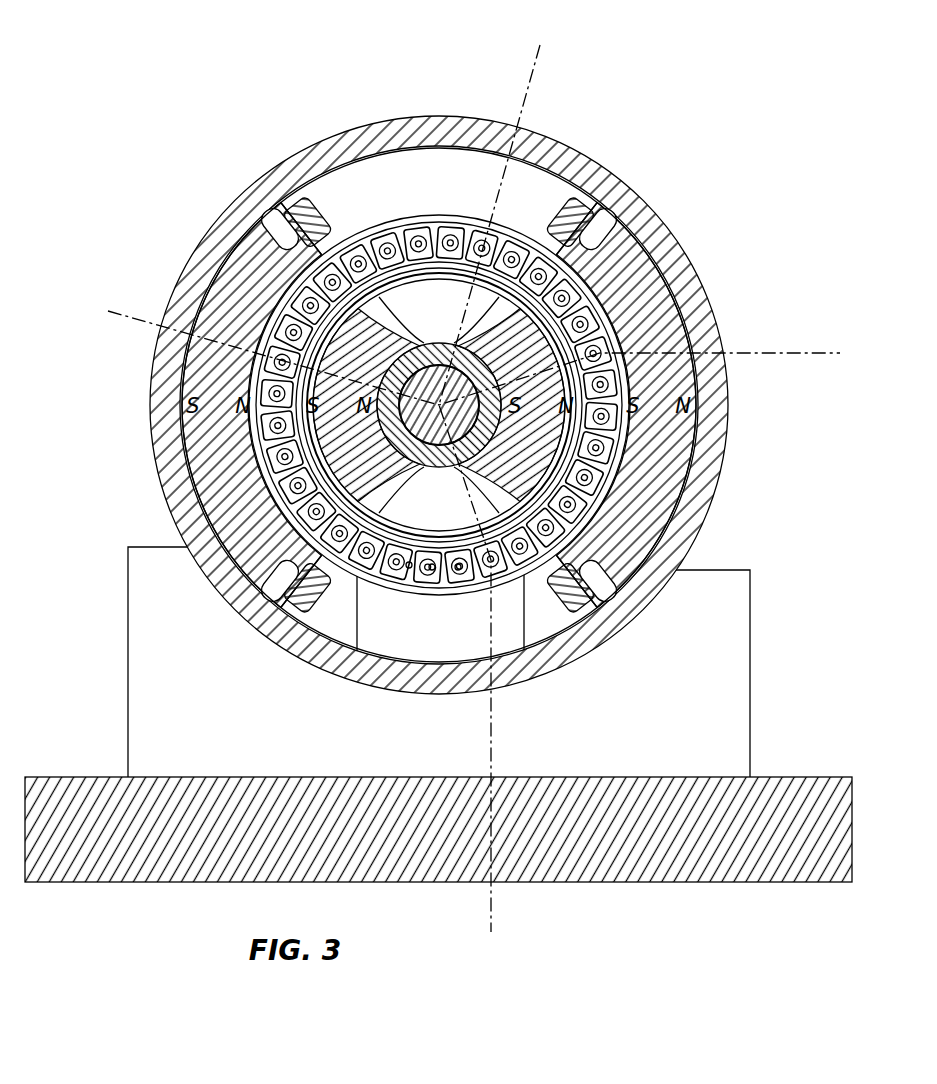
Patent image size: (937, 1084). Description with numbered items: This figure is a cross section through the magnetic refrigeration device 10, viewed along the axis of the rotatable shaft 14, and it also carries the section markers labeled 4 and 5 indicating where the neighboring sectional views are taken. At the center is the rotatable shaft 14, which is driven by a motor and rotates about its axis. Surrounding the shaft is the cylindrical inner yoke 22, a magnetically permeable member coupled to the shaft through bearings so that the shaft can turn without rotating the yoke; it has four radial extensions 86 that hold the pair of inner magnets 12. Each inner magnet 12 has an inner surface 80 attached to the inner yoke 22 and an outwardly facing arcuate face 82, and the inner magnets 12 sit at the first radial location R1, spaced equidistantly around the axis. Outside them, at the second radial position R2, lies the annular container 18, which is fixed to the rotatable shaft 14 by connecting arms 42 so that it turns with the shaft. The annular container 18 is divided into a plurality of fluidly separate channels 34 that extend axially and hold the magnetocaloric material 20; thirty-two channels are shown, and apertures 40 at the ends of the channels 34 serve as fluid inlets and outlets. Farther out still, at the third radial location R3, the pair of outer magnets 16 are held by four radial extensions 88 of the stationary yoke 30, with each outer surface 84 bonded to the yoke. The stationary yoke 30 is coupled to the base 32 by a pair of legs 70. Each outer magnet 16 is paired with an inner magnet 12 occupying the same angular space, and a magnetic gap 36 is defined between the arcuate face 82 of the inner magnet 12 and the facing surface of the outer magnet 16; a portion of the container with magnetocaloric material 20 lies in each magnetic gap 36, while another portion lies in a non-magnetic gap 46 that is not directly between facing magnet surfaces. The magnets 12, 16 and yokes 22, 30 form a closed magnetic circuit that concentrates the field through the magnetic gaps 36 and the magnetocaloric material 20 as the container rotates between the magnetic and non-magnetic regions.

The magnetic refrigeration device 10 is at (700, 45).
The inner magnets 12 is at (540, 455).
The rotatable shaft 14 is at (215, 196).
The outer magnets 16 is at (192, 290).
The annular container 18 is at (548, 168).
The magnetocaloric material 20 is at (440, 232).
The inner yoke 22 is at (600, 228).
The stationary yoke 30 is at (355, 226).
The base 32 is at (805, 790).
The channels 34 is at (385, 238).
The magnetic gap 36 is at (612, 346).
The apertures 40 is at (458, 568).
The connecting arms 42 is at (452, 335).
The non-magnetic gap 46 is at (410, 232).
The legs 70 is at (735, 645).
The inner surface 80 is at (320, 565).
The outwardly facing arcuate face 82 is at (600, 480).
The outer surface 84 is at (222, 247).
The radial extensions 86 is at (268, 232).
The radial extensions 88 is at (300, 200).
The first radial location R1 is at (445, 402).
The second radial position R2 is at (445, 402).
The third radial location R3 is at (445, 402).
The section line 4- 4 is at (540, 50).
The section line 5- 5 is at (108, 310).